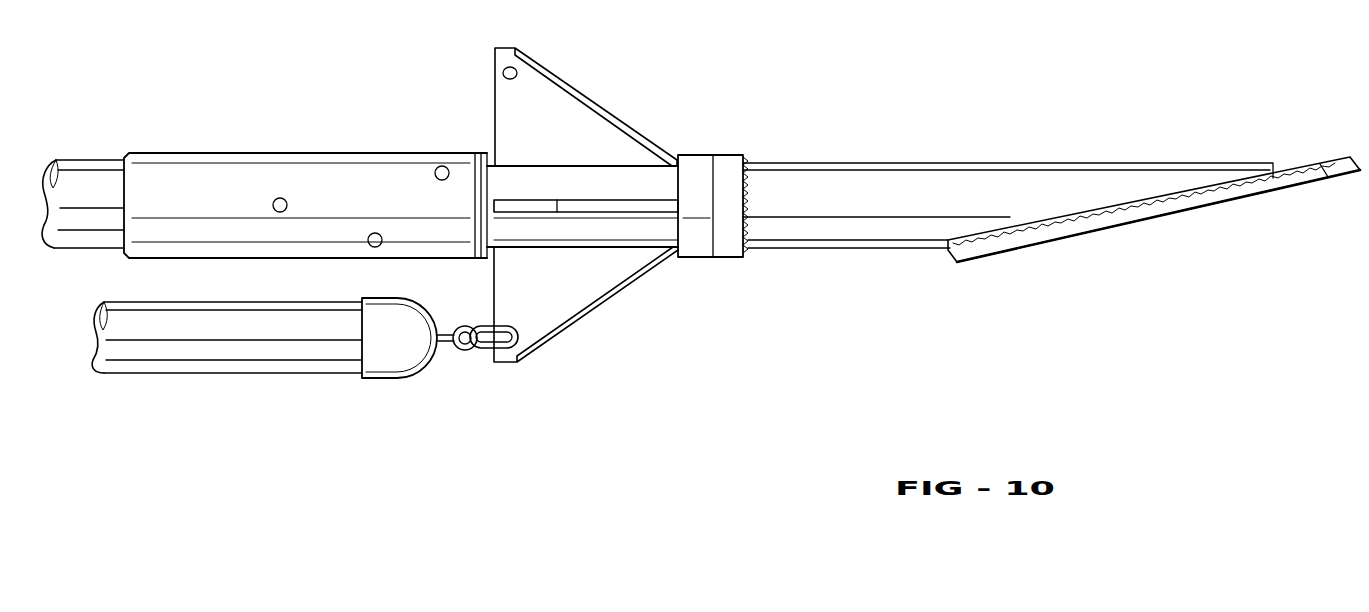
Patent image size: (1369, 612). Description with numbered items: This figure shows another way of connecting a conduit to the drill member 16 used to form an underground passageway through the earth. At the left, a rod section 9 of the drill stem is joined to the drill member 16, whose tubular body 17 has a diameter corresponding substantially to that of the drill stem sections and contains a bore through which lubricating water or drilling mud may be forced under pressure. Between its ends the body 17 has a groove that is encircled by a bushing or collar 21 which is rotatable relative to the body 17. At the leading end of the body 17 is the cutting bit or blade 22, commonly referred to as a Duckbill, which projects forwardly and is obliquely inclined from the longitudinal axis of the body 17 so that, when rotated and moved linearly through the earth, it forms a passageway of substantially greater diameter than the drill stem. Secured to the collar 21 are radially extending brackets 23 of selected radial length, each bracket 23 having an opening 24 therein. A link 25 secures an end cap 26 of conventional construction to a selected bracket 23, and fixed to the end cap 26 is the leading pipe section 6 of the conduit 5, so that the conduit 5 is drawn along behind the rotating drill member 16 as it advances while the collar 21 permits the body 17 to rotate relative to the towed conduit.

The conduit 5 is at (192, 392).
The pipe section 6 is at (297, 374).
The rod section 9 is at (63, 161).
The drill member 16 is at (410, 92).
The tubular body 17 is at (270, 158).
The collar 21 is at (695, 158).
The blade 22 is at (1177, 208).
The bracket 23 is at (573, 302).
The opening 24 is at (520, 74).
The link 25 is at (483, 358).
The end cap 26 is at (403, 378).